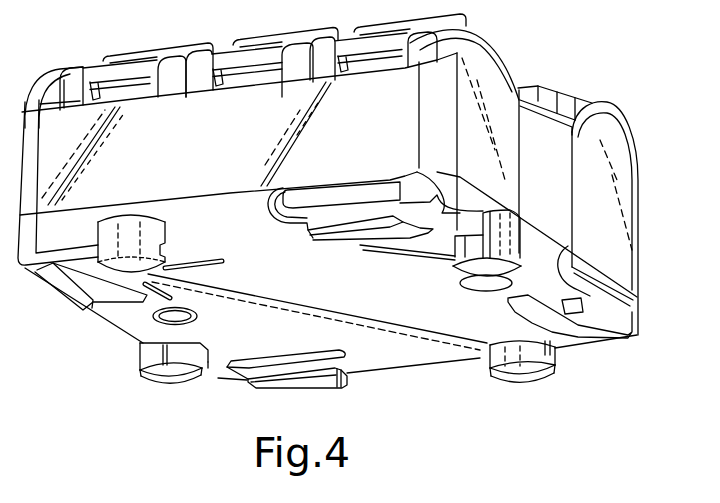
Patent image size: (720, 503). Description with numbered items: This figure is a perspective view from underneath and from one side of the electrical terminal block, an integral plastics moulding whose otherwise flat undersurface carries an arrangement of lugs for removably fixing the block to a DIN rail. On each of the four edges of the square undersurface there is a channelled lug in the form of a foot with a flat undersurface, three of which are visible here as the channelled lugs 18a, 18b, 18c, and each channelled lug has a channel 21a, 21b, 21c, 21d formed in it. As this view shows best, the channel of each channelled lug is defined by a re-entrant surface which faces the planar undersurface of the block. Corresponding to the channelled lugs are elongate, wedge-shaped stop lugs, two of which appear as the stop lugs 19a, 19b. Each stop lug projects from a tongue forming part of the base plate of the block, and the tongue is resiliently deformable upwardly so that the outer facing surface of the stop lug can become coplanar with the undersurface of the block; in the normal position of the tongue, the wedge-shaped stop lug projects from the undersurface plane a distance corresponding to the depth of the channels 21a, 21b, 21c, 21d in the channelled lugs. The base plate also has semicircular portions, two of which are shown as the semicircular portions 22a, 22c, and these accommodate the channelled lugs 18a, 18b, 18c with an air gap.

The channelled lug 18a is at (505, 241).
The channelled lug 18b is at (545, 383).
The channelled lug 18c is at (153, 385).
The stop lug 19a is at (593, 317).
The stop lug 19b is at (342, 387).
The channel 21a is at (447, 258).
The channel 21b is at (538, 348).
The channel 21c is at (173, 353).
The channel 21d is at (163, 236).
The semicircular portion 22a is at (438, 193).
The semicircular portion 22c is at (193, 360).